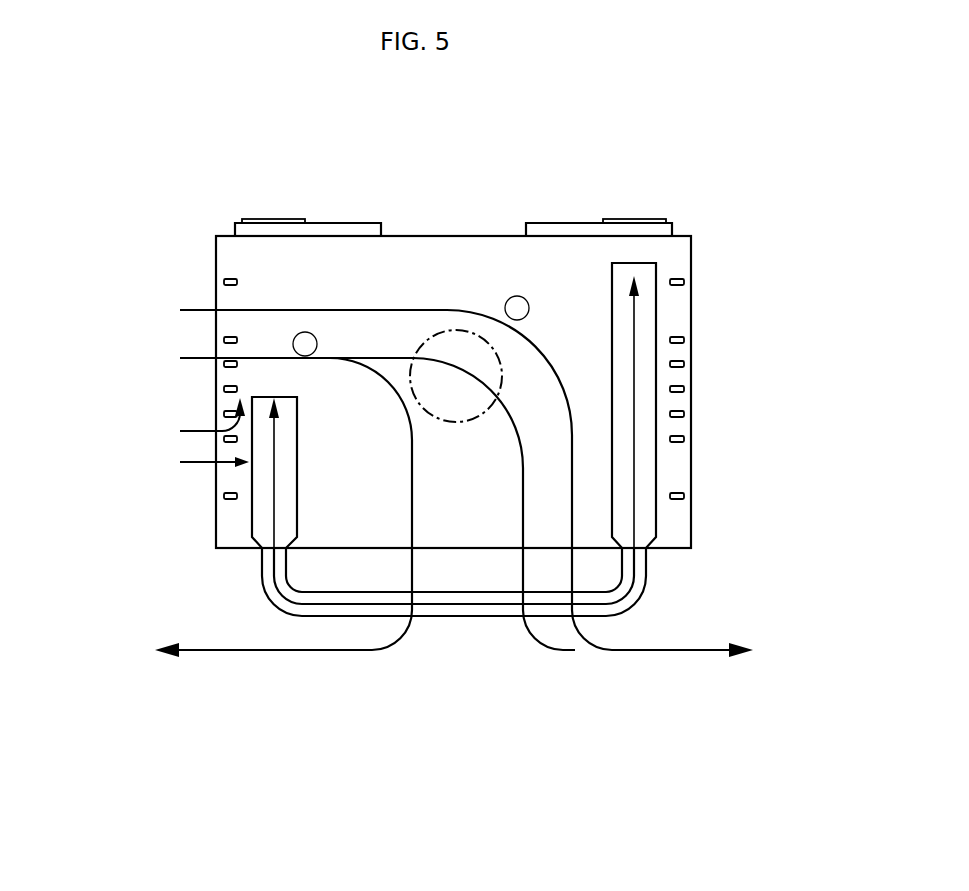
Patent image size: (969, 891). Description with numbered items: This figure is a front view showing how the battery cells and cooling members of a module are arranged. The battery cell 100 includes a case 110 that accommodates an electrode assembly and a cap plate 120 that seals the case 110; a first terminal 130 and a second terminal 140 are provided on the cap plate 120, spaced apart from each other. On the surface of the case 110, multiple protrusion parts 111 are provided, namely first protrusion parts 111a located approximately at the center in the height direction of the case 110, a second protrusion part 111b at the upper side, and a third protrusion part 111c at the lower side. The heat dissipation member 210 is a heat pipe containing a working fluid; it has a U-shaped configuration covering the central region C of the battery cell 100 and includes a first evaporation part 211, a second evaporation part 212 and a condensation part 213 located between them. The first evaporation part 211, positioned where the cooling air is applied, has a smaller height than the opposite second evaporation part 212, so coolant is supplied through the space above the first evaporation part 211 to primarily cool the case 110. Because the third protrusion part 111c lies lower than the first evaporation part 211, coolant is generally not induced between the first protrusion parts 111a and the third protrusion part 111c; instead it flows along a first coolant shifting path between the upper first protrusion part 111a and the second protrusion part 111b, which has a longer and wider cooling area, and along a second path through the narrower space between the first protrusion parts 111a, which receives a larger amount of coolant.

The battery cell 100 is at (588, 204).
The case 110 is at (678, 259).
The protrusion parts 111 is at (108, 292).
The first protrusion parts 111a is at (228, 340).
The second protrusion part 111b is at (228, 286).
The third protrusion part 111c is at (235, 492).
The cap plate 120 is at (434, 236).
The first terminal 130 is at (272, 218).
The second terminal 140 is at (643, 219).
The heat dissipation member 210 is at (556, 690).
The first evaporation part 211 is at (290, 505).
The second evaporation part 212 is at (615, 505).
The condensation part 213 is at (460, 617).
The central region C is at (502, 383).